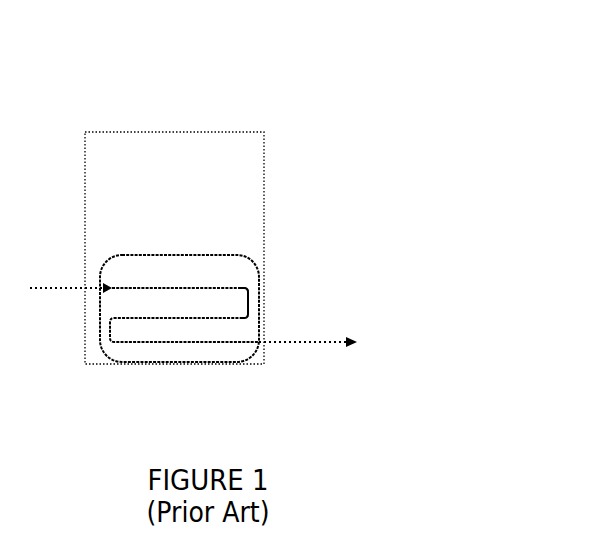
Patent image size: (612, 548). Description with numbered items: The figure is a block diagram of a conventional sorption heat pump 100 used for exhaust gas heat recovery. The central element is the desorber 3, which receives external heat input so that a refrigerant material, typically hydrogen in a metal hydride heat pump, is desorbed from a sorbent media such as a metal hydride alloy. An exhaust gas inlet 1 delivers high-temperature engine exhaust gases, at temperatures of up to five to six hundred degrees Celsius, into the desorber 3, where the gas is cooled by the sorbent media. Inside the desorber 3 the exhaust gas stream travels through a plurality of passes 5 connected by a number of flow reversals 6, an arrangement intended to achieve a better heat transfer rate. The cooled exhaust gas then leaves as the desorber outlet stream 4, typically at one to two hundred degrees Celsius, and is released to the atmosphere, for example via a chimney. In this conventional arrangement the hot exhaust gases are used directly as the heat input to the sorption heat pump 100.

The sorption heat pump 100 is at (436, 114).
The exhaust gas inlet 1 is at (68, 269).
The desorber 3 is at (213, 254).
The desorber outlet stream 4 is at (308, 358).
The passes 5 is at (212, 287).
The flow reversals 6 is at (250, 305).